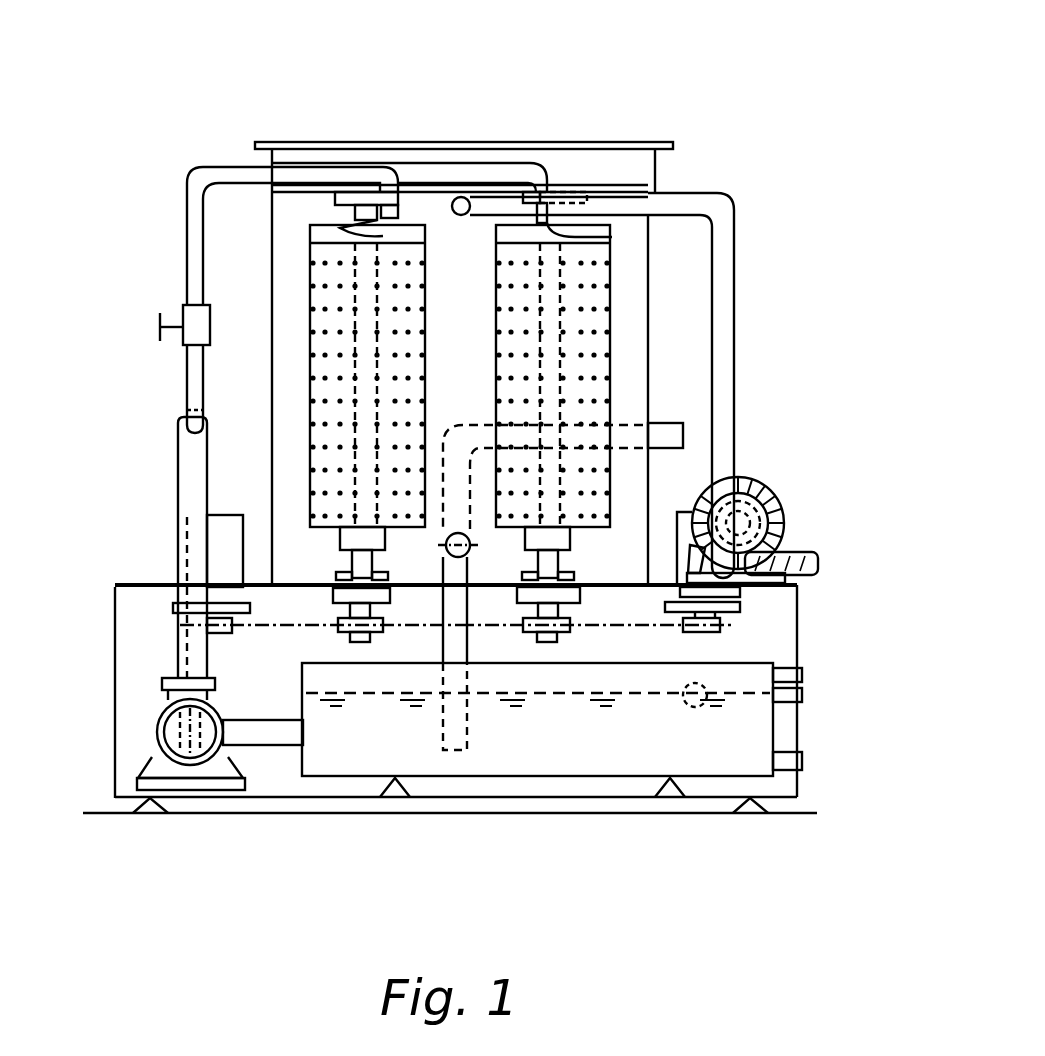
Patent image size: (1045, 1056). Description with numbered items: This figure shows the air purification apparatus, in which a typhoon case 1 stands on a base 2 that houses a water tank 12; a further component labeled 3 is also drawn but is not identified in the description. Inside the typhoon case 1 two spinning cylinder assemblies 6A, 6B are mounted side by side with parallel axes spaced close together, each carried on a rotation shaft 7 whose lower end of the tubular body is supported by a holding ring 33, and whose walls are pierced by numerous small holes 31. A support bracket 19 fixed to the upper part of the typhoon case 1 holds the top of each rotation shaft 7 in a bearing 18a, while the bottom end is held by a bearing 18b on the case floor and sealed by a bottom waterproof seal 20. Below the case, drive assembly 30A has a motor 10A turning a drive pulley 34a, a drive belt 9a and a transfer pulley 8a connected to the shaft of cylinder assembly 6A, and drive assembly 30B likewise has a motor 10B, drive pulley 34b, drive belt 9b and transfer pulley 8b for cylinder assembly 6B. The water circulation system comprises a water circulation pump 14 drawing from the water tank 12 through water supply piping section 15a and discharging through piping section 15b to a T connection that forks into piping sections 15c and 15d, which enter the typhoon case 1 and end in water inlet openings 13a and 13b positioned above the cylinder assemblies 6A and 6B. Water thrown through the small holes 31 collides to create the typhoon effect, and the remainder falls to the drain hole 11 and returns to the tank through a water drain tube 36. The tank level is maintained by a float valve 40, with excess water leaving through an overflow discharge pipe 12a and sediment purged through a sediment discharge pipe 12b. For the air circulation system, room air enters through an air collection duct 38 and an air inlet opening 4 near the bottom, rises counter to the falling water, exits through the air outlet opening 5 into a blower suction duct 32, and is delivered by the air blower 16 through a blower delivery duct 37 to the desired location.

The typhoon case 1 is at (268, 403).
The base 2 is at (468, 800).
The cover plate 3 is at (527, 148).
The air inlet opening 4 is at (433, 590).
The air outlet opening 5 is at (466, 198).
The spinning cylinder assembly 6A is at (307, 320).
The spinning cylinder assembly 6B is at (613, 320).
The rotation shaft 7 is at (352, 562).
The transfer pulley 8a is at (368, 630).
The transfer pulley 8b is at (562, 630).
The drive belt 9a is at (265, 627).
The drive belt 9b is at (614, 624).
The motor 10A is at (222, 555).
The motor 10B is at (720, 593).
The drain hole 11 is at (468, 580).
The water tank 12 is at (552, 760).
The overflow discharge pipe 12a is at (792, 678).
The sediment discharge pipe 12b is at (797, 767).
The water inlet opening 13a is at (345, 231).
The water inlet opening 13b is at (612, 237).
The water circulation pump 14 is at (152, 727).
The water supply piping section 15a is at (262, 737).
The water supply piping section 15b is at (182, 495).
The water supply piping section 15c is at (306, 170).
The water supply piping section 15d is at (448, 168).
The air blower 16 is at (780, 487).
The bearing 18a is at (347, 192).
The bearing 18b is at (333, 593).
The support bracket 19 is at (398, 176).
The bottom waterproof seal 20 is at (384, 578).
The drive assembly 30A is at (292, 643).
The drive assembly 30B is at (742, 635).
The small holes 31 is at (508, 343).
The blower suction duct 32 is at (736, 328).
The holding ring 33 is at (338, 542).
The drive pulley 34a is at (192, 628).
The drive pulley 34b is at (690, 632).
The water drain tube 36 is at (456, 627).
The blower delivery duct 37 is at (798, 563).
The air collection duct 38 is at (668, 423).
The float valve 40 is at (757, 702).